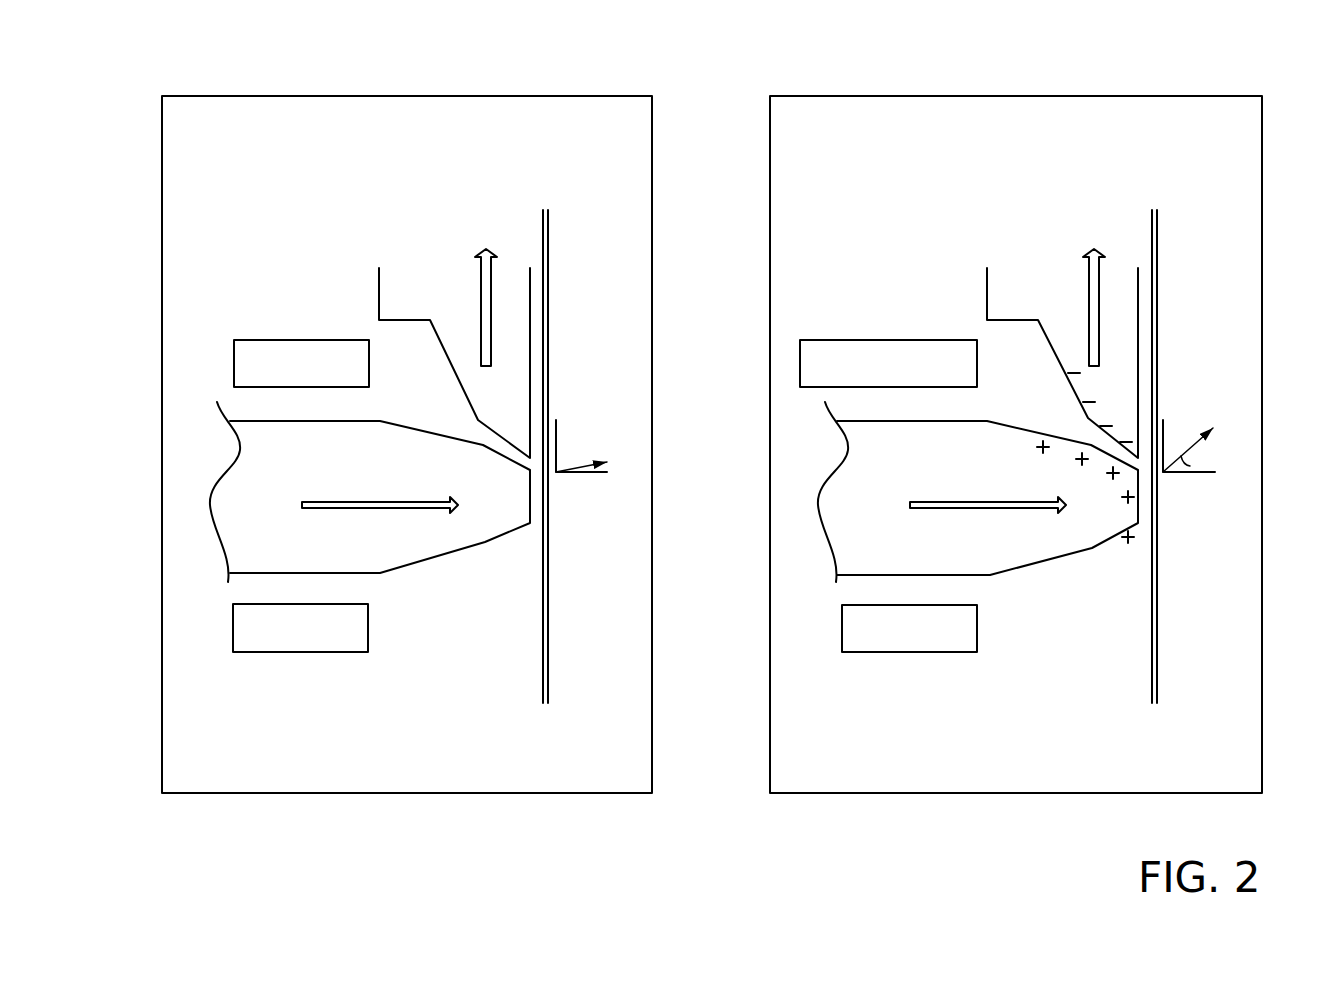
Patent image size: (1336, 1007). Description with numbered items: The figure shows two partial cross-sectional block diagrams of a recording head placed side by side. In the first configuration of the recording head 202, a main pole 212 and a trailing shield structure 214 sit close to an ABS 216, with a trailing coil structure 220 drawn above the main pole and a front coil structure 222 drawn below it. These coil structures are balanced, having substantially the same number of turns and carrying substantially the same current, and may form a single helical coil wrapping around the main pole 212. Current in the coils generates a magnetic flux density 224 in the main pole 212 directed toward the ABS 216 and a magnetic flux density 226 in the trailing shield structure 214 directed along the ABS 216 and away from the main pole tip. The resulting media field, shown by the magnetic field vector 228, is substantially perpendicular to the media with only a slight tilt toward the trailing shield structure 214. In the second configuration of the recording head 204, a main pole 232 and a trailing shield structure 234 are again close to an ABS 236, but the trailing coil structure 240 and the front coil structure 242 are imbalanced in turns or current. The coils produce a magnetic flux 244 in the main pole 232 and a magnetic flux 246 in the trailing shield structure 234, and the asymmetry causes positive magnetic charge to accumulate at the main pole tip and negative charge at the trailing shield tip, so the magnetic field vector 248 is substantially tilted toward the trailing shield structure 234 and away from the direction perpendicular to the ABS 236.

The recording head 202 is at (323, 815).
The recording head 204 is at (1010, 817).
The main pole 212 is at (255, 488).
The trailing shield structure 214 is at (376, 300).
The ABS 216 is at (556, 236).
The trailing coil structure 220 is at (301, 363).
The front coil structure 222 is at (300, 628).
The magnetic flux density 224 is at (310, 510).
The magnetic flux density 226 is at (488, 246).
The magnetic field vector 228 is at (588, 475).
The main pole 232 is at (863, 488).
The trailing shield structure 234 is at (984, 300).
The ABS 236 is at (1162, 237).
The trailing coil structure 240 is at (888, 363).
The front coil structure 242 is at (909, 628).
The magnetic flux 244 is at (920, 512).
The magnetic flux 246 is at (1095, 247).
The magnetic field vector 248 is at (1188, 474).